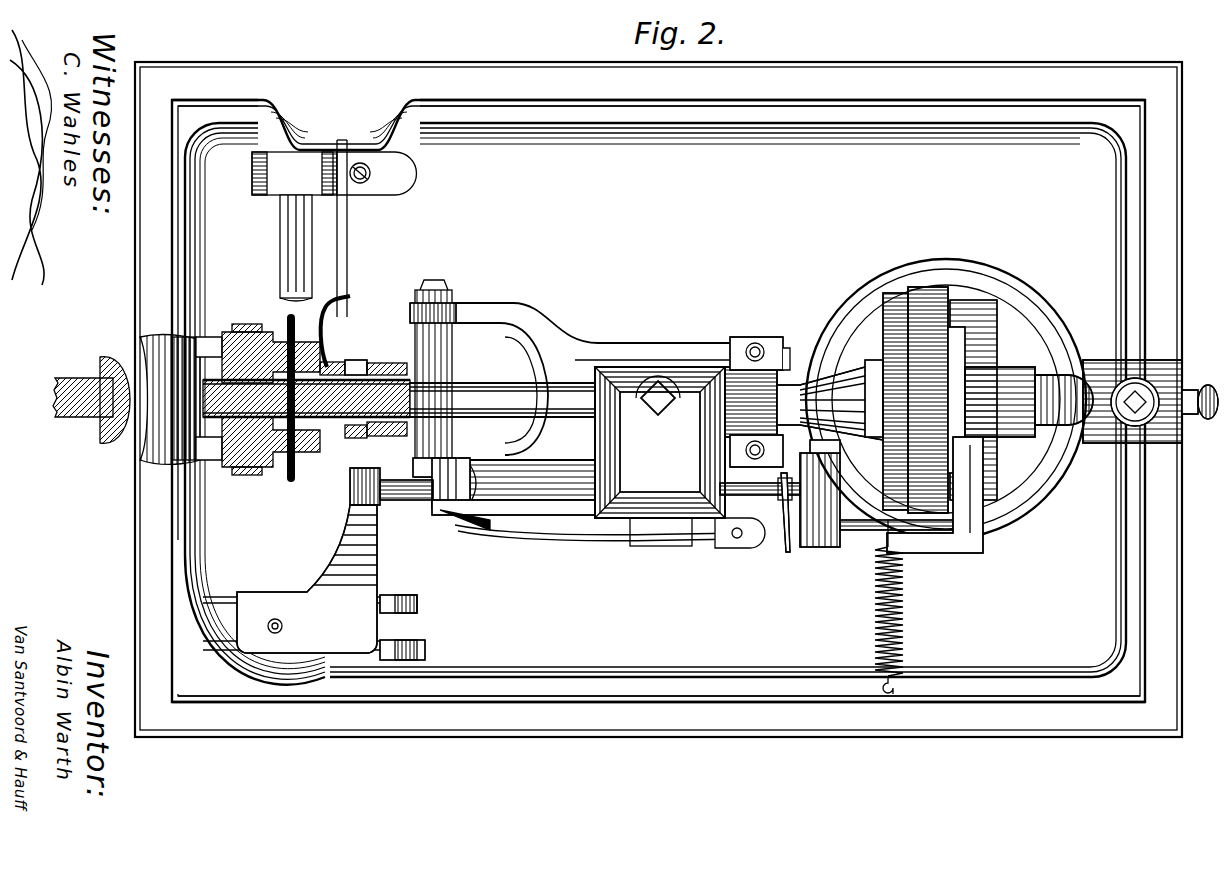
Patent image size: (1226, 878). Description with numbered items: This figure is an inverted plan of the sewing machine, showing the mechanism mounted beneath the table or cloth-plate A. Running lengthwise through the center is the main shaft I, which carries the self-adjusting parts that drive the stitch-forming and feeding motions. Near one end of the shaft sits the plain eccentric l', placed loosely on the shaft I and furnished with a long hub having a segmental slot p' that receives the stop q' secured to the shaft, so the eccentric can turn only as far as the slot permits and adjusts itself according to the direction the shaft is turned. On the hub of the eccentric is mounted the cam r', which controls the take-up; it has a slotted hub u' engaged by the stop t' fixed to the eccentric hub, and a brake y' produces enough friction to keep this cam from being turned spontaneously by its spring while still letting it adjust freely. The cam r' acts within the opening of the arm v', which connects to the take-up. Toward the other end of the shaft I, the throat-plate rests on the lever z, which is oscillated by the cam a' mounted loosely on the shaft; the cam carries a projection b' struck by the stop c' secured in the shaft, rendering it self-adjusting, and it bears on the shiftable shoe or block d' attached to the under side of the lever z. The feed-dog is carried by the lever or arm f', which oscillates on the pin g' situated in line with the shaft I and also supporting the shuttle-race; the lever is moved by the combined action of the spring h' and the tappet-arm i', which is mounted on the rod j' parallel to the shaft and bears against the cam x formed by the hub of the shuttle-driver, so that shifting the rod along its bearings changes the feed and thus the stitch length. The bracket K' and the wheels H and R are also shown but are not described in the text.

The table or cloth-plate A is at (658, 399).
The plain eccentric l' is at (271, 385).
The cam r' is at (326, 331).
The brake y' is at (339, 346).
The slotted hub u' is at (359, 350).
The stop t' is at (387, 349).
The segmental slot p' is at (364, 437).
The stop q' is at (389, 436).
The arm v' is at (308, 398).
The bracket K' is at (318, 564).
The cam a' is at (751, 402).
The stop c' is at (767, 337).
The lever z is at (782, 378).
The main shaft I is at (790, 392).
The cam x is at (834, 404).
The projection b' is at (768, 447).
The shoe or block d' is at (773, 452).
The tappet-arm i' is at (820, 493).
The rod j' is at (760, 512).
The lever or arm f' is at (935, 495).
The wheel H is at (886, 401).
The ratchet wheel R is at (928, 400).
The spring h' is at (898, 607).
The pin g' is at (1150, 401).